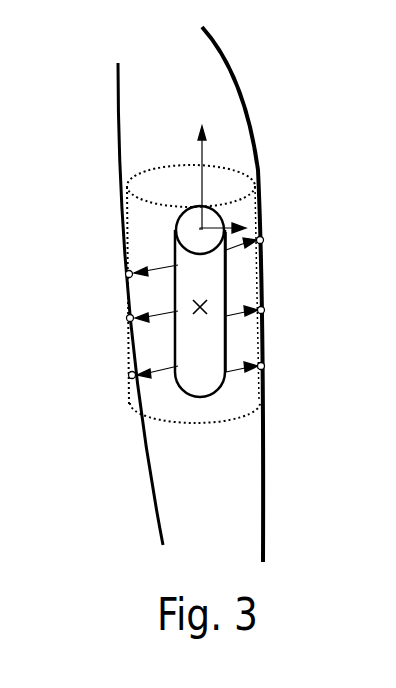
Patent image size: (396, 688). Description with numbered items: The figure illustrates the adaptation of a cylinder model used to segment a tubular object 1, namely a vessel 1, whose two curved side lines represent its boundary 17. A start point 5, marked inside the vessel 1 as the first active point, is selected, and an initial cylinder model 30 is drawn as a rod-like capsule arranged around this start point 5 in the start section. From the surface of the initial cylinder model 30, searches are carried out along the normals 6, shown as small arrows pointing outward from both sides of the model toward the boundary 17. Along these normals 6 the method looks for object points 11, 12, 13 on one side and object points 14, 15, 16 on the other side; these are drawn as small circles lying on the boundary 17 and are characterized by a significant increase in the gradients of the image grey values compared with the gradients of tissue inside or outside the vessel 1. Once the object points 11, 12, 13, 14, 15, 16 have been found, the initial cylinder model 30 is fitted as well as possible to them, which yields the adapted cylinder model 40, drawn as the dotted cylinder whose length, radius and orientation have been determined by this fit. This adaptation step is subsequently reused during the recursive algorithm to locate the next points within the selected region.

The tubular object 1 is at (227, 128).
The start point 5 is at (205, 300).
The normals 6 is at (152, 266).
The object point 11 is at (264, 241).
The object point 12 is at (265, 310).
The object point 13 is at (265, 366).
The object point 14 is at (125, 274).
The object point 15 is at (126, 319).
The object point 16 is at (128, 375).
The boundary 17 is at (121, 112).
The initial cylinder model 30 is at (230, 340).
The adapted cylinder model 40 is at (234, 168).